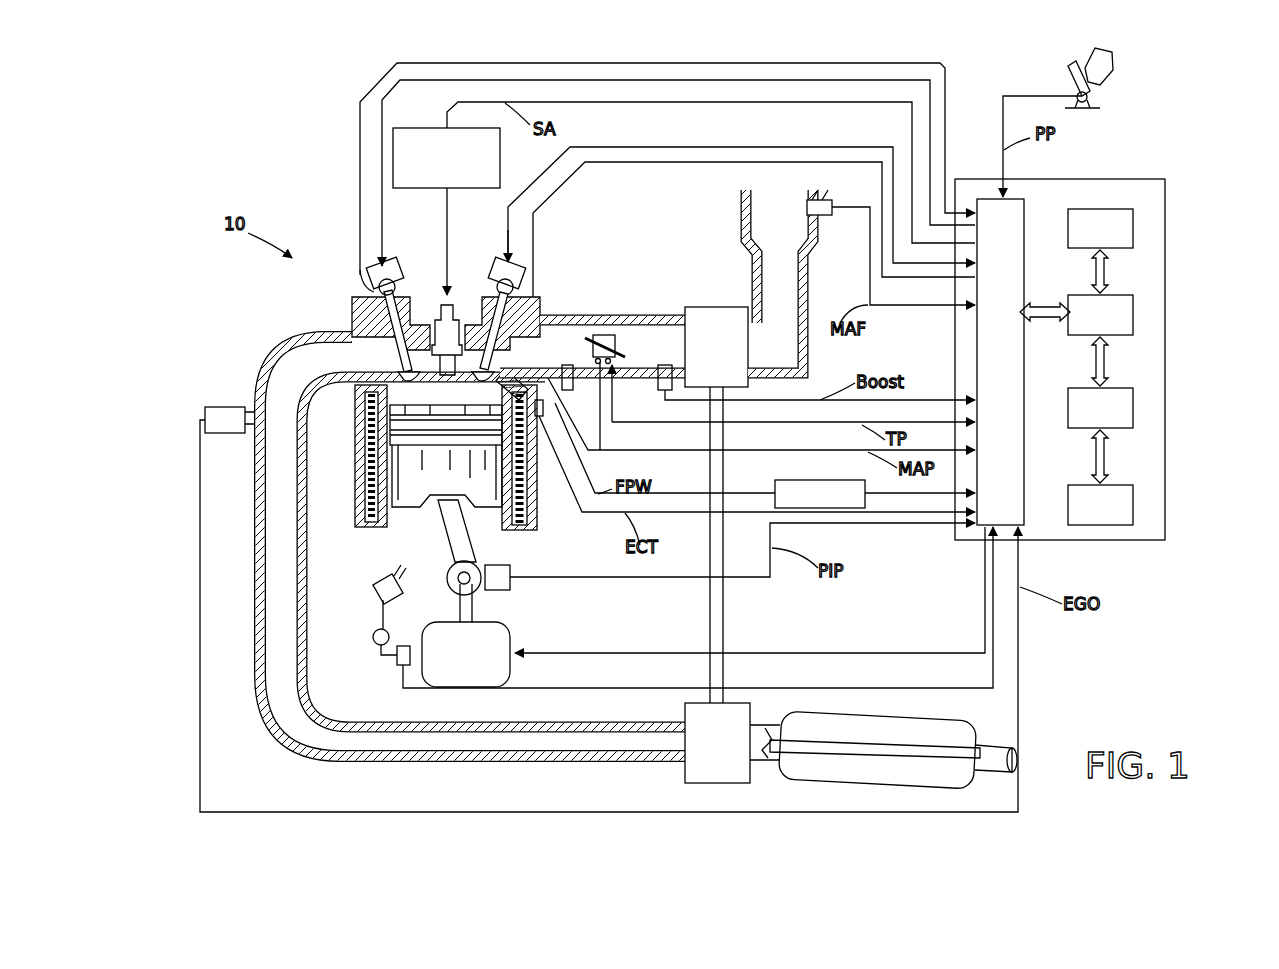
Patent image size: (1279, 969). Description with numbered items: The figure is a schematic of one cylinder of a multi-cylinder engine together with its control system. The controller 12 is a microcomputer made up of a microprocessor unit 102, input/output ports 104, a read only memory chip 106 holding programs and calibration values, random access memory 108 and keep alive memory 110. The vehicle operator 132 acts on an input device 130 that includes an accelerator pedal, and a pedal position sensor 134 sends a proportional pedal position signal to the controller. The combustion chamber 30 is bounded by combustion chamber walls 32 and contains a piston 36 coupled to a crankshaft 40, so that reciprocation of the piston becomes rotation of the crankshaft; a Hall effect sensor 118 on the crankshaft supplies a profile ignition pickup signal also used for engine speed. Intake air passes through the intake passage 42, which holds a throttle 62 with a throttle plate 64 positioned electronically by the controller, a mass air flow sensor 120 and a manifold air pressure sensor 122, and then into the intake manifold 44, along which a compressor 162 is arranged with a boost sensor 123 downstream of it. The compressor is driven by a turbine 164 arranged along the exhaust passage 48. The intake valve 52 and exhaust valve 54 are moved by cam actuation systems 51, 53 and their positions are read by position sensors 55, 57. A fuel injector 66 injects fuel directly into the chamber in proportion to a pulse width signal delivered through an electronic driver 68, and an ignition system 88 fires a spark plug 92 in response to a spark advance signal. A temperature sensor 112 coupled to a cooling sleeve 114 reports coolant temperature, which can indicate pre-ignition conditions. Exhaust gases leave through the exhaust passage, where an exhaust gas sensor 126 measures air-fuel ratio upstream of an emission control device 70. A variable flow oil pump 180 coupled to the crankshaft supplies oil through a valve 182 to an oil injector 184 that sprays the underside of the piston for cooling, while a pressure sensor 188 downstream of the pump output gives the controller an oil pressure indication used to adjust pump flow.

The controller 12 is at (1160, 182).
The combustion chamber 30 is at (446, 444).
The combustion chamber walls 32 is at (380, 530).
The piston 36 is at (472, 535).
The crankshaft 40 is at (478, 592).
The intake passage 42 is at (779, 281).
The intake manifold 44 is at (592, 346).
The exhaust passage 48 is at (472, 546).
The cam actuation system 51 is at (495, 262).
The intake valve 52 is at (458, 322).
The cam actuation system 53 is at (395, 262).
The exhaust valve 54 is at (375, 340).
The position sensor 55 is at (522, 290).
The position sensor 57 is at (372, 285).
The throttle 62 is at (610, 335).
The throttle plate 64 is at (588, 335).
The fuel injector 66 is at (510, 378).
The electronic driver 68 is at (805, 480).
The emission control device 70 is at (935, 722).
The ignition system 88 is at (410, 128).
The spark plug 92 is at (440, 322).
The microprocessor unit 102 is at (1135, 315).
The input/output ports 104 is at (1028, 205).
The read only memory chip 106 is at (1135, 225).
The random access memory 108 is at (1135, 410).
The keep alive memory 110 is at (1135, 505).
The temperature sensor 112 is at (545, 420).
The cooling sleeve 114 is at (522, 470).
The Hall effect sensor 118 is at (505, 590).
The mass air flow sensor 120 is at (822, 200).
The manifold air pressure sensor 122 is at (568, 392).
The boost sensor 123 is at (660, 392).
The exhaust gas sensor 126 is at (205, 412).
The input device 130 is at (1060, 75).
The vehicle operator 132 is at (1110, 62).
The pedal position sensor 134 is at (1105, 97).
The compressor 162 is at (700, 307).
The turbine 164 is at (685, 775).
The variable flow oil pump 180 is at (512, 670).
The valve 182 is at (372, 640).
The oil injector 184 is at (403, 592).
The pressure sensor 188 is at (397, 665).